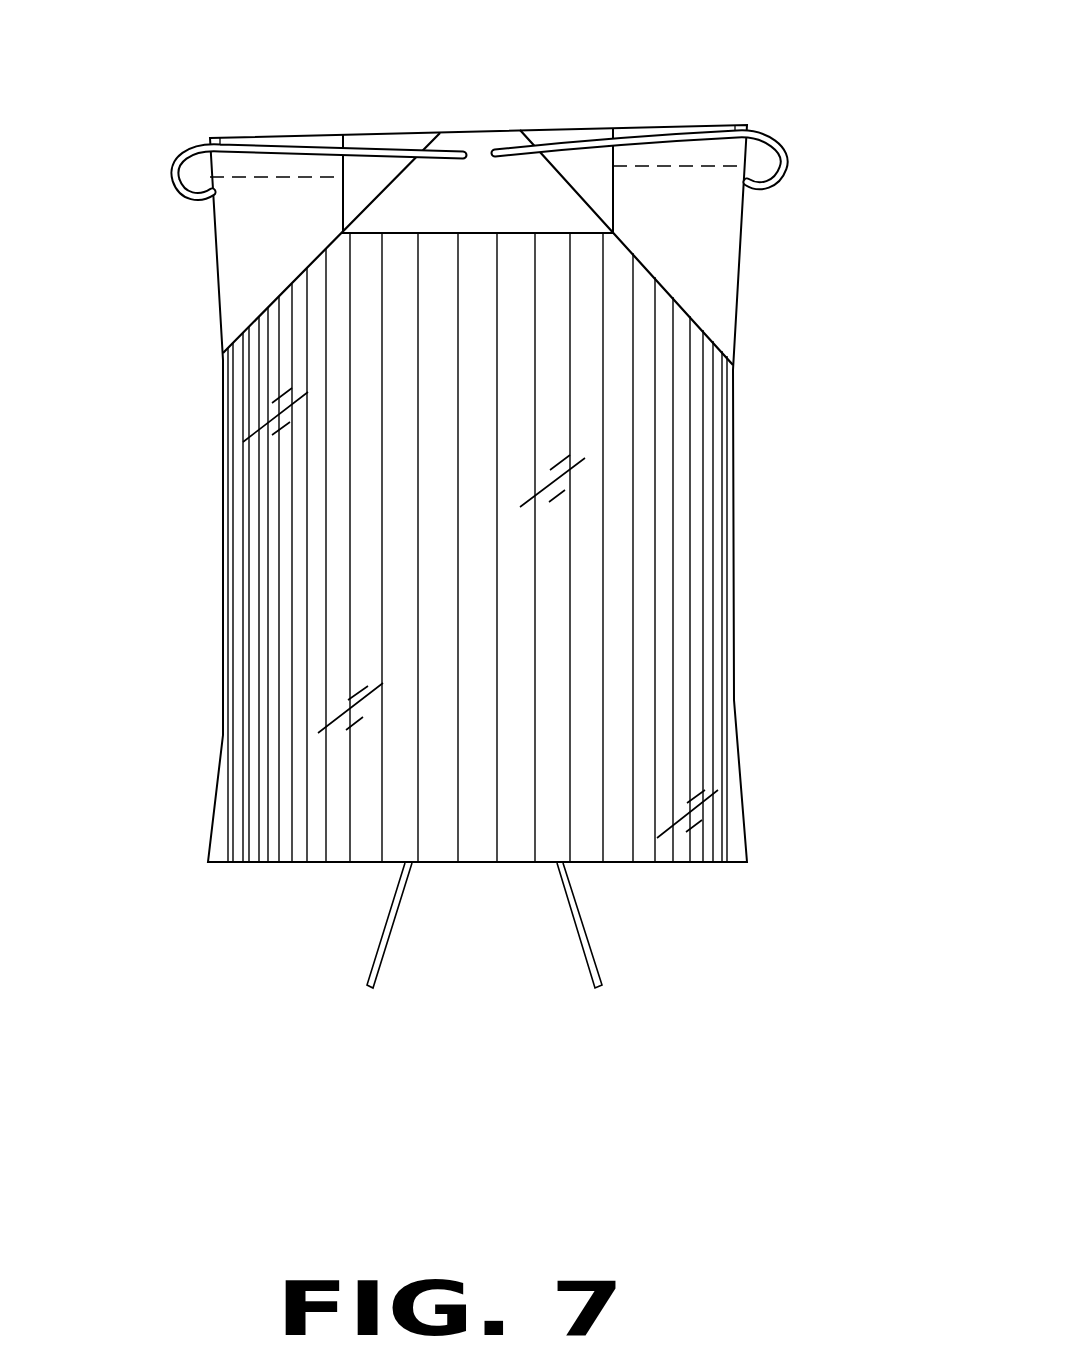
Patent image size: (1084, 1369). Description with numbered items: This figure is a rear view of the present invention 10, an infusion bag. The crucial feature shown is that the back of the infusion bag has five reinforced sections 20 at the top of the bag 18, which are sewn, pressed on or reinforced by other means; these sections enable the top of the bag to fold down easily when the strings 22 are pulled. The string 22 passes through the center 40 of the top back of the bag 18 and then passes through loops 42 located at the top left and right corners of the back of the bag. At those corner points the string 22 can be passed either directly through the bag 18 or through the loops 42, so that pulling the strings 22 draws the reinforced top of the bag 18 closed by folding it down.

The present invention 10 is at (797, 450).
The bag 18 is at (218, 863).
The reinforced sections 20 is at (233, 285).
The string 22 is at (187, 192).
The center 40 is at (485, 168).
The loops 42 is at (220, 148).